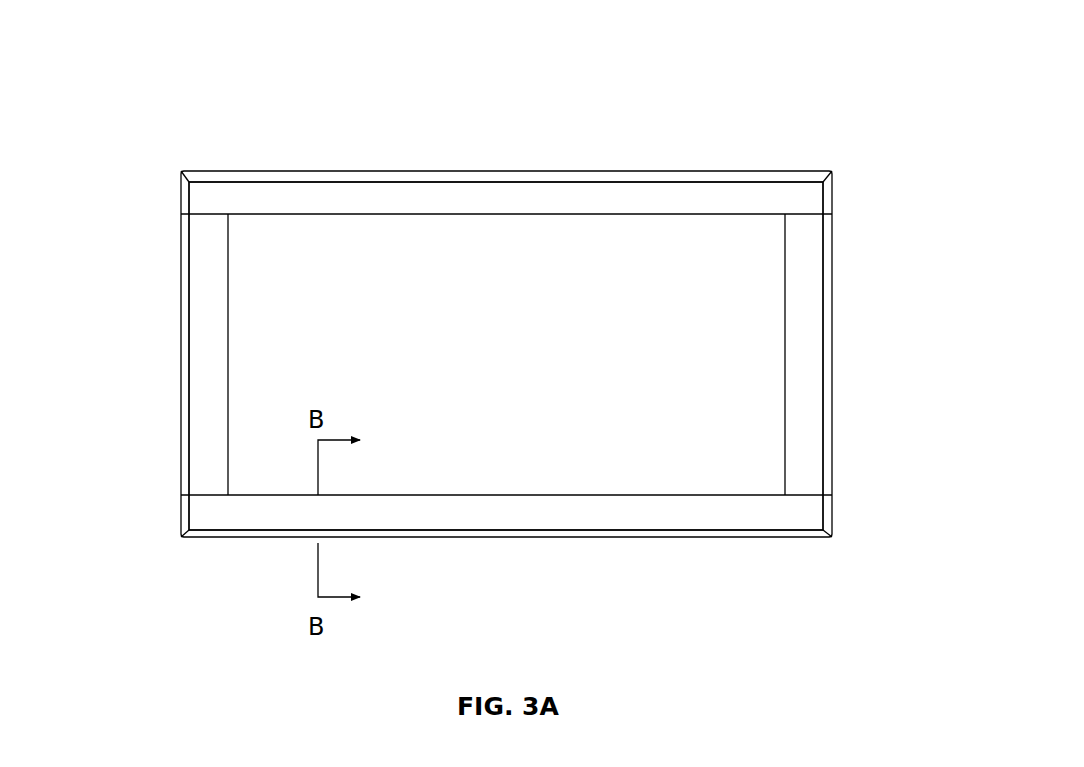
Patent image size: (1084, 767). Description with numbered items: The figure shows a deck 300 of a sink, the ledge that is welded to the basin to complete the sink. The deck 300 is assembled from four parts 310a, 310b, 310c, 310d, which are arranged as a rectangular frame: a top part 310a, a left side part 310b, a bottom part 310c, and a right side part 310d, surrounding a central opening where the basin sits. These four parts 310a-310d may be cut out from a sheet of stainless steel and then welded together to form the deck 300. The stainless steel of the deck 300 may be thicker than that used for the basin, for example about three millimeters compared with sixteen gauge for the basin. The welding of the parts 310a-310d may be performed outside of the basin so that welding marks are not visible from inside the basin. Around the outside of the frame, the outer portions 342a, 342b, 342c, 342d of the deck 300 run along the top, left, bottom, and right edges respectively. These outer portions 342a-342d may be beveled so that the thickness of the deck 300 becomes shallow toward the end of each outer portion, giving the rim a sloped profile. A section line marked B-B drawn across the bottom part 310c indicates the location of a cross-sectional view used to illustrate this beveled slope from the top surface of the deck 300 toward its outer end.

The deck 300 is at (293, 85).
The first part of the deck 310a is at (455, 160).
The second part of the deck 310b is at (248, 340).
The third part of the deck 310c is at (500, 563).
The fourth part of the deck 310d is at (760, 337).
The outer portion of the deck 342a is at (573, 176).
The outer portion of the deck 342b is at (184, 340).
The outer portion of the deck 342c is at (640, 533).
The outer portion of the deck 342d is at (834, 337).